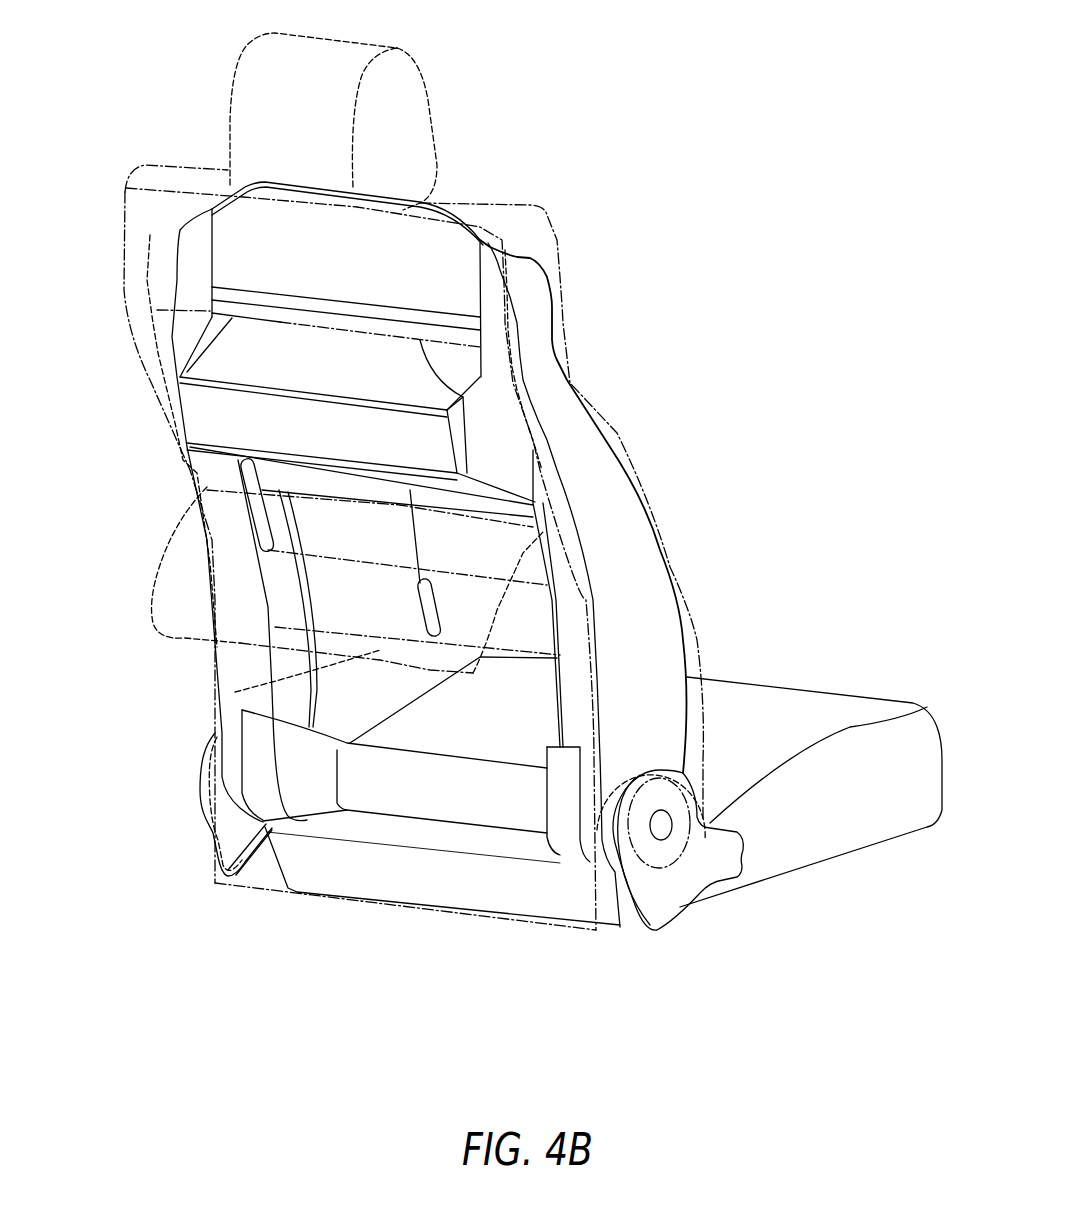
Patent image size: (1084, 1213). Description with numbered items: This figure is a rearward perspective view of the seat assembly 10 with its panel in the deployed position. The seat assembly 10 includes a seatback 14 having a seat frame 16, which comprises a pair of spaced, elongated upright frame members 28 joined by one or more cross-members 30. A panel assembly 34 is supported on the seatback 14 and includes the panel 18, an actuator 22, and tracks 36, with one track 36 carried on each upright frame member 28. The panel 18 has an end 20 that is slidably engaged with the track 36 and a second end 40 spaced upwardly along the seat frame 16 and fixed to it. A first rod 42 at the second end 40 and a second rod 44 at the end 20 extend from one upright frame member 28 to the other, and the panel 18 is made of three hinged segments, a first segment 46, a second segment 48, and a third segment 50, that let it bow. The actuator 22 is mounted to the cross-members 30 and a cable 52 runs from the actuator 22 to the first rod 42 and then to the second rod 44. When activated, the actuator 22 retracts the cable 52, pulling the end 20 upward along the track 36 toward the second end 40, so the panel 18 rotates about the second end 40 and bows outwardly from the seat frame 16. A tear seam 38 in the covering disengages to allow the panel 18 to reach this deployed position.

The seat assembly 10 is at (712, 75).
The seatback 14 is at (553, 250).
The seat frame 16 is at (693, 650).
The panel 18 is at (199, 344).
The end 20 is at (490, 500).
The actuator 22 is at (420, 592).
The upright frame members 28 is at (243, 610).
The cross-members 30 is at (235, 690).
The panel assembly 34 is at (345, 305).
The track 36 is at (255, 540).
The tear seam 38 is at (157, 310).
The second end 40 is at (440, 385).
The first rod 42 is at (272, 312).
The second rod 44 is at (310, 487).
The first segment 46 is at (217, 413).
The second segment 48 is at (247, 464).
The third segment 50 is at (212, 370).
The cable 52 is at (415, 537).